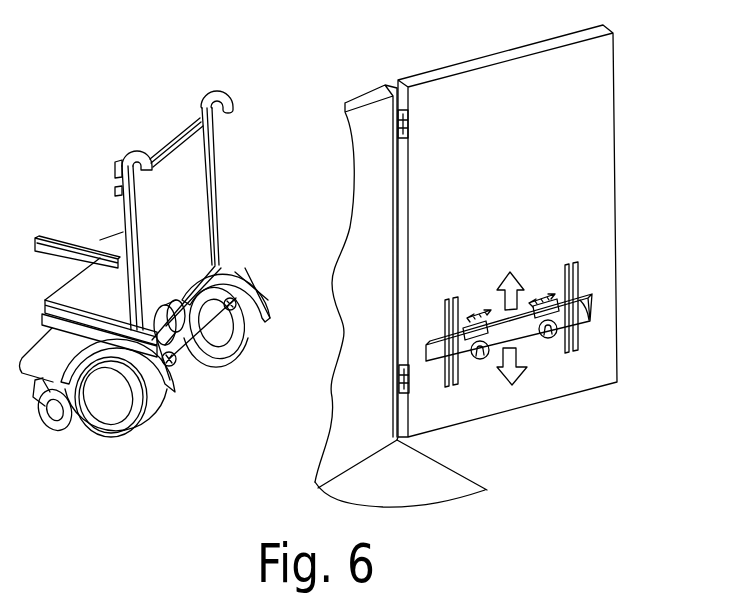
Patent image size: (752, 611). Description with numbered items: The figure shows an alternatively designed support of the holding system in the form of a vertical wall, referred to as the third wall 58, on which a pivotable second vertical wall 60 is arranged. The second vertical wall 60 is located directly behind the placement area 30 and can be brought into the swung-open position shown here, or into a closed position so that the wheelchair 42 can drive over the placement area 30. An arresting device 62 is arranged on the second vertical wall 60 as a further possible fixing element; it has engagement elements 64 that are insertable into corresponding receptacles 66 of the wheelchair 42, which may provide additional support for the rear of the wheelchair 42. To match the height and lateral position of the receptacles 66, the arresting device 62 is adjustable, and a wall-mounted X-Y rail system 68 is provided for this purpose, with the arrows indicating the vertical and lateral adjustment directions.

The placement area 30 is at (419, 489).
The wheelchair 42 is at (168, 167).
The third wall 58 is at (358, 126).
The second vertical wall 60 is at (600, 87).
The arresting device 62 is at (540, 263).
The engagement elements 64 is at (591, 301).
The receptacles 66 is at (177, 365).
The X-Y rail system 68 is at (587, 327).